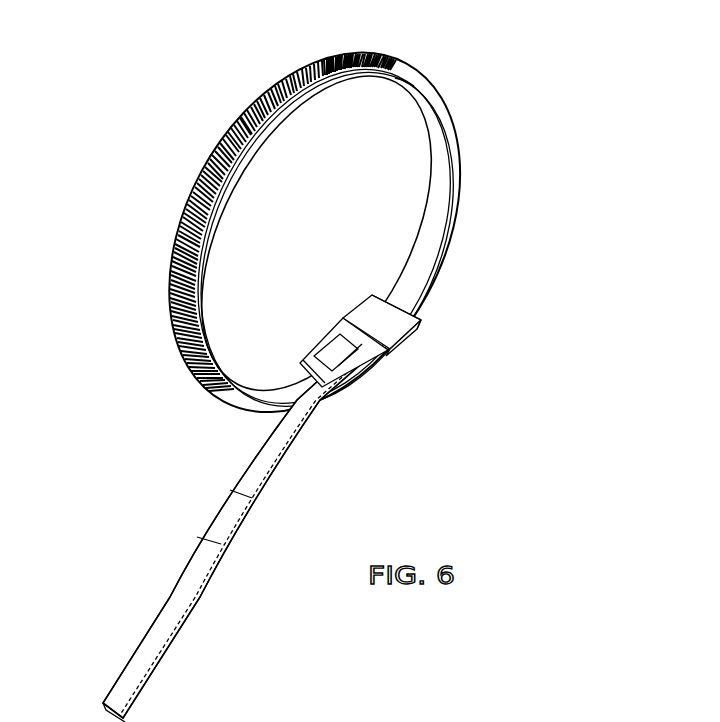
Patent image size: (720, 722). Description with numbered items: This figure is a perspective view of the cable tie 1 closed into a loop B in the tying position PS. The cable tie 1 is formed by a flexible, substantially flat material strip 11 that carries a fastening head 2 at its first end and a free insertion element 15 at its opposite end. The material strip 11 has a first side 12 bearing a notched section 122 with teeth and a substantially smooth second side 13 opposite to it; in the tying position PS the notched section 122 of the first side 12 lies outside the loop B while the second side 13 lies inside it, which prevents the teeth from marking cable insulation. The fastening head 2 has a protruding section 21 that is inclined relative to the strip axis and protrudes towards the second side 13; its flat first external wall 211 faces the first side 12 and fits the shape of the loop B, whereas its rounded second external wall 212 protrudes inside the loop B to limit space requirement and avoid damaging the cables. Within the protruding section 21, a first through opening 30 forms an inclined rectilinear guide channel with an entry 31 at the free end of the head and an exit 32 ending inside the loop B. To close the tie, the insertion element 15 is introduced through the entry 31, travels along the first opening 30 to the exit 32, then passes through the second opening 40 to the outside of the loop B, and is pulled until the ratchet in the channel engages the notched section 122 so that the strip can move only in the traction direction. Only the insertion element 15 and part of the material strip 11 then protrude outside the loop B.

The cable tie 1 is at (373, 362).
The material strip 11 is at (468, 186).
The first side 12 is at (277, 77).
The notched section 122 is at (250, 117).
The second side 13 is at (420, 240).
The insertion element 15 is at (163, 592).
The fastening head 2 is at (433, 371).
The protruding section 21 is at (424, 353).
The first external wall 211 is at (407, 360).
The second external wall 212 is at (377, 317).
The first through opening 30 is at (426, 320).
The entry 31 is at (420, 313).
The exit 32 is at (362, 346).
The second opening 40 is at (343, 360).
The loop B is at (412, 84).
The tying position PS is at (517, 122).